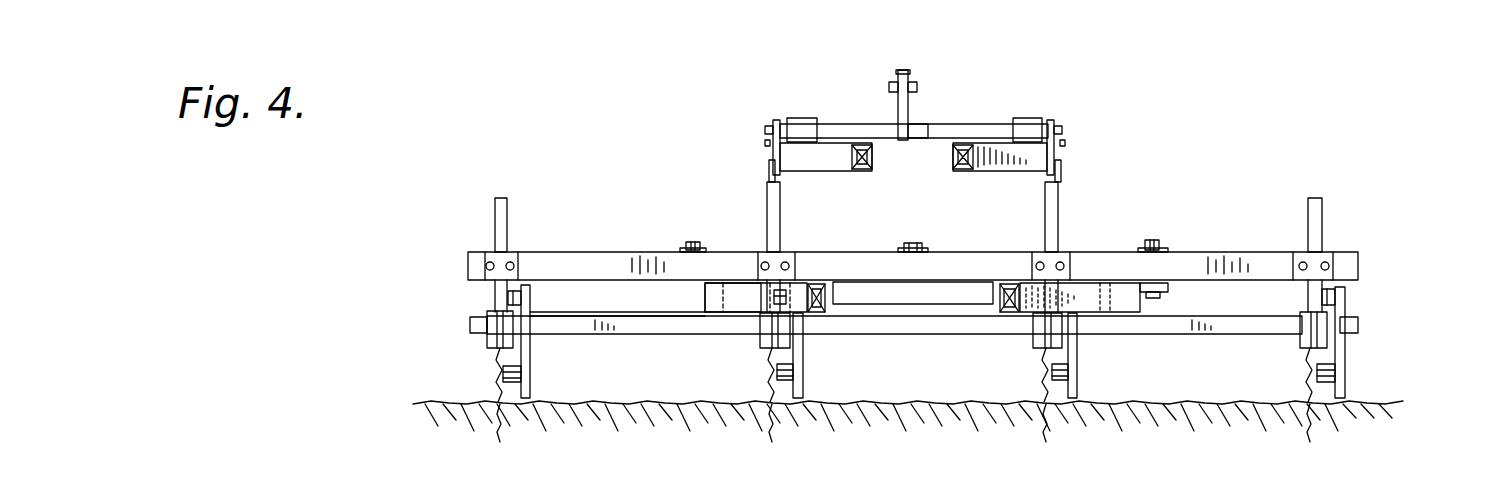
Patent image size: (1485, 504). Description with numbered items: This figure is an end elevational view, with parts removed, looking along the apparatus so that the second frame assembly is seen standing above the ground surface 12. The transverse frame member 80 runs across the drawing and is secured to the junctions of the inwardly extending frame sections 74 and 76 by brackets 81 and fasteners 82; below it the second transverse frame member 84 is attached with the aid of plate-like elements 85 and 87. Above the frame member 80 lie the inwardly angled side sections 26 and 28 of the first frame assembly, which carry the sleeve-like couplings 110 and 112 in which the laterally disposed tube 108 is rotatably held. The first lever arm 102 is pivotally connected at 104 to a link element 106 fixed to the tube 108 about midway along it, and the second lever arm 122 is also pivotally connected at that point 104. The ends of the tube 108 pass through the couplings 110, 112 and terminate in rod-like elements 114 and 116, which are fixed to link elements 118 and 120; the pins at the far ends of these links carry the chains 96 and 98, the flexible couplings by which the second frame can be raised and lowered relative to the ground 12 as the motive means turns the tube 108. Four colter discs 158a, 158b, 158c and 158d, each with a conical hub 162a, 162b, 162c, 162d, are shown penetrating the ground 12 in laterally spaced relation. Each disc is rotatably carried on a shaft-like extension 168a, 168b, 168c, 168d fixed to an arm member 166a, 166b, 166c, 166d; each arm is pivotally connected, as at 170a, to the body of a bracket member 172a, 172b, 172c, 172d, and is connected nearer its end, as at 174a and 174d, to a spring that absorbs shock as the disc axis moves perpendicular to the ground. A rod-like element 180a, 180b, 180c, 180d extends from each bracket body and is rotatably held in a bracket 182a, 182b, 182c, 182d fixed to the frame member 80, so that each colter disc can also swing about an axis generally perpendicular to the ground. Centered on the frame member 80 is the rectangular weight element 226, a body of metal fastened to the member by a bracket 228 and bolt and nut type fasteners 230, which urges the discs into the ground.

The ground surface 12 is at (434, 398).
The side frame section 26 is at (828, 166).
The side frame section 28 is at (994, 172).
The inwardly extending frame section 74 is at (808, 283).
The inwardly extending frame section 76 is at (998, 280).
The transverse frame member 80 is at (573, 236).
The bracket 81 is at (672, 246).
The fastener 82 is at (696, 242).
The transverse frame member 84 is at (1225, 324).
The plate-like element 85 is at (702, 304).
The plate-like element 87 is at (1160, 308).
The chain 96 is at (768, 184).
The chain 98 is at (1064, 196).
The first lever arm 102 is at (908, 80).
The pivotal connection 104 is at (886, 86).
The link element 106 is at (914, 118).
The tube 108 is at (983, 124).
The sleeve-like coupling 110 is at (800, 118).
The sleeve-like coupling 112 is at (1034, 118).
The rod-like element 114 is at (752, 120).
The rod-like element 116 is at (1056, 132).
The link element 118 is at (768, 138).
The link element 120 is at (1070, 142).
The second lever arm 122 is at (896, 72).
The colter disc 158a is at (498, 414).
The colter disc 158b is at (770, 417).
The colter disc 158c is at (1048, 422).
The colter disc 158d is at (1314, 418).
The hub 162a is at (494, 354).
The hub 162b is at (760, 376).
The hub 162c is at (1036, 378).
The hub 162d is at (1302, 374).
The arm member 166a is at (530, 358).
The arm member 166b is at (804, 344).
The arm member 166c is at (1074, 412).
The arm member 166d is at (1344, 338).
The shaft-like extension 168a is at (524, 382).
The shaft-like extension 168b is at (798, 378).
The shaft-like extension 168c is at (1073, 384).
The shaft-like extension 168d is at (1330, 362).
The pivotal connection 170a is at (530, 316).
The bracket member 172a is at (497, 332).
The bracket member 172b is at (775, 330).
The bracket member 172c is at (1034, 344).
The bracket member 172d is at (1306, 322).
The pivotal connection 174a is at (505, 298).
The pivotal connection 174d is at (1336, 292).
The rod-like element 180a is at (506, 198).
The rod-like element 180b is at (768, 218).
The rod-like element 180c is at (1044, 220).
The rod-like element 180d is at (1316, 192).
The bracket 182a is at (486, 251).
The bracket 182b is at (788, 252).
The bracket 182c is at (1068, 252).
The bracket 182d is at (1332, 252).
The weight element 226 is at (892, 302).
The bracket 228 is at (924, 246).
The bolt and nut type fastener 230 is at (924, 248).